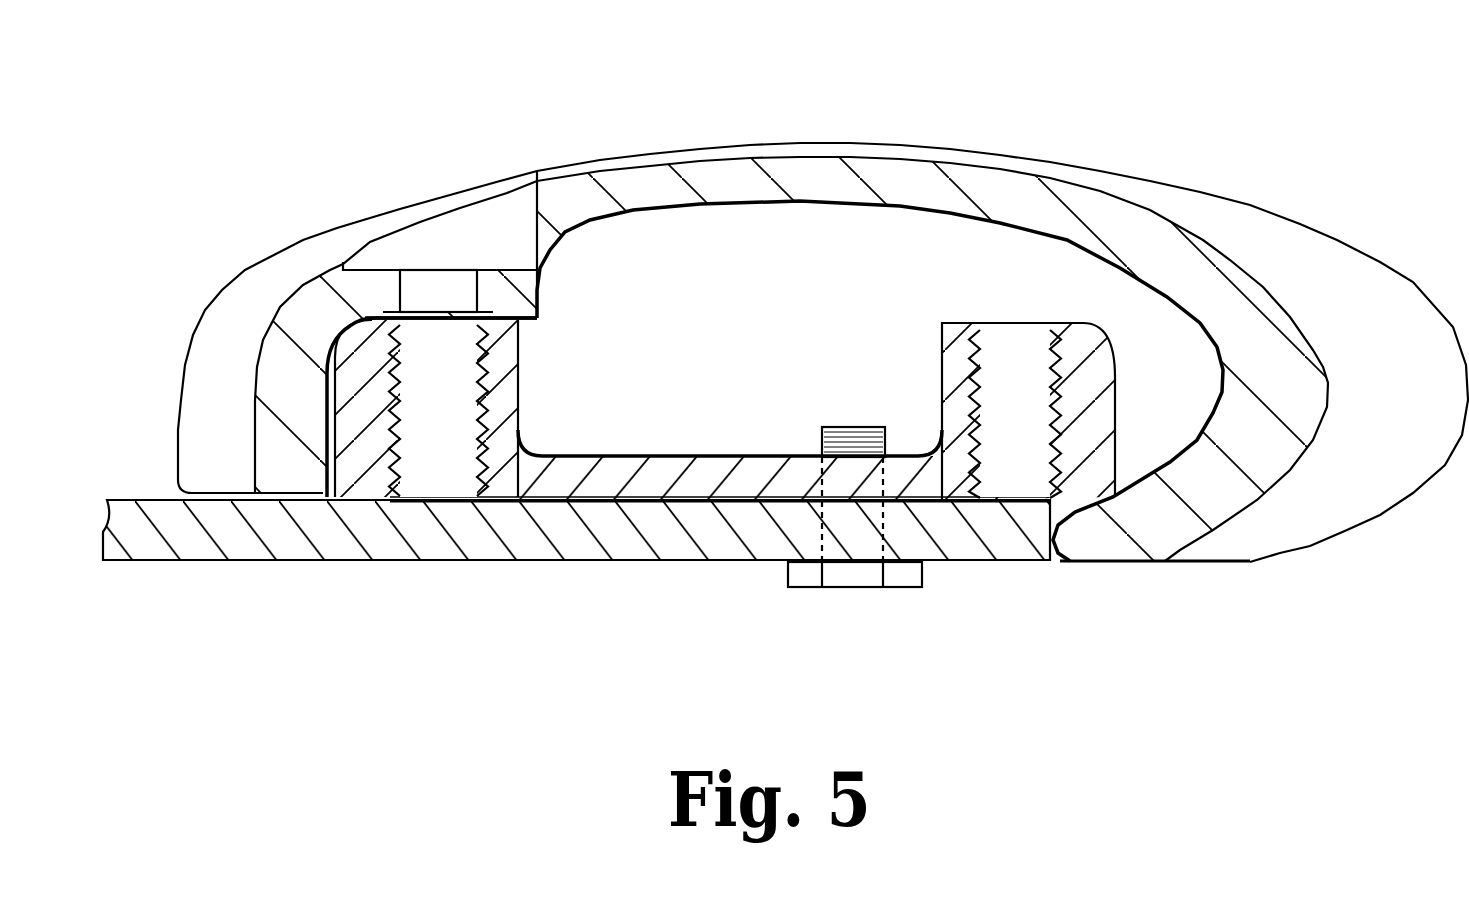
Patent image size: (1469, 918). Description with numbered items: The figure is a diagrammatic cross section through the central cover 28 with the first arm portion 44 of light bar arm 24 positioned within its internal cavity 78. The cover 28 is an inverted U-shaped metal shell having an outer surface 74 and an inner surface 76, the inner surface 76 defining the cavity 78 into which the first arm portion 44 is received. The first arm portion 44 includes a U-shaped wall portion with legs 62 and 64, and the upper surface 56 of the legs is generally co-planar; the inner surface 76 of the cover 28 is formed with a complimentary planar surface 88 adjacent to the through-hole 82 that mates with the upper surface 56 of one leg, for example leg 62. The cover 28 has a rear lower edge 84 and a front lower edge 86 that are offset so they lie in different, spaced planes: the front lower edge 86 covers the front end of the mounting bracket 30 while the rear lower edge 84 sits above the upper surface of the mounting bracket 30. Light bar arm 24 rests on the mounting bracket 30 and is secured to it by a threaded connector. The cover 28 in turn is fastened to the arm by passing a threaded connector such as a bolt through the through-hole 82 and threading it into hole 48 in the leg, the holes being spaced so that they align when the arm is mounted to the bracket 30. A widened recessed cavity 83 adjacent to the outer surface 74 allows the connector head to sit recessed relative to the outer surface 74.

The light bar arm 24 is at (707, 482).
The central cover 28 is at (910, 146).
The mounting bracket 30 is at (687, 545).
The first arm portion 44 is at (737, 482).
The hole 48 is at (433, 478).
The upper surface 56 is at (372, 318).
The leg 62 is at (500, 402).
The leg 64 is at (970, 374).
The outer surface 74 is at (1370, 401).
The inner surface 76 is at (688, 212).
The internal cavity 78 is at (1042, 303).
The through-hole 82 is at (430, 290).
The widened recessed cavity 83 is at (533, 203).
The rear lower edge 84 is at (230, 498).
The front lower edge 86 is at (1102, 562).
The complimentary planar surface 88 is at (517, 352).